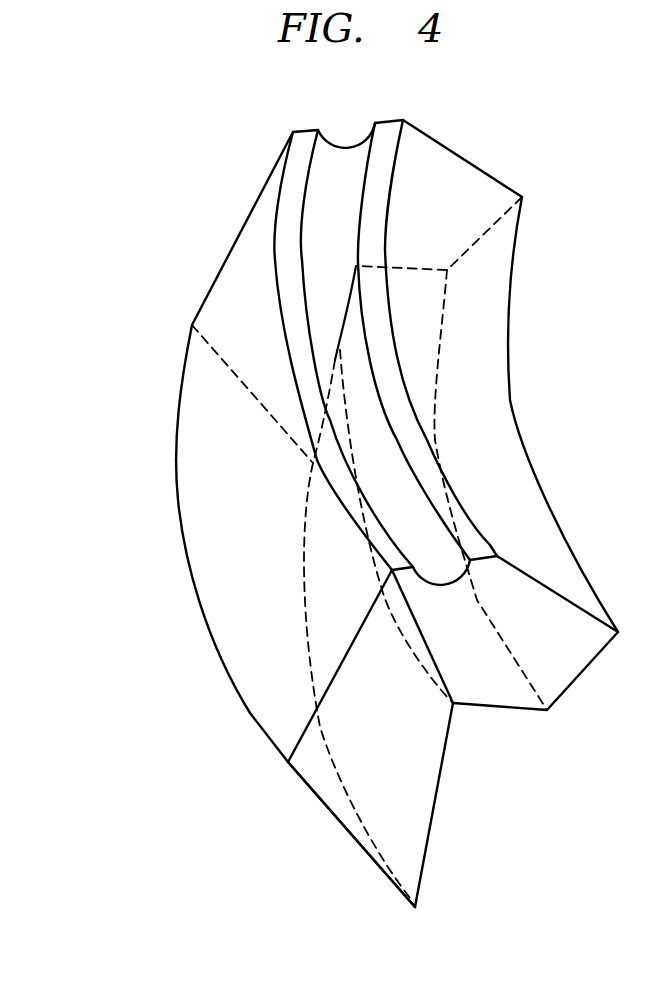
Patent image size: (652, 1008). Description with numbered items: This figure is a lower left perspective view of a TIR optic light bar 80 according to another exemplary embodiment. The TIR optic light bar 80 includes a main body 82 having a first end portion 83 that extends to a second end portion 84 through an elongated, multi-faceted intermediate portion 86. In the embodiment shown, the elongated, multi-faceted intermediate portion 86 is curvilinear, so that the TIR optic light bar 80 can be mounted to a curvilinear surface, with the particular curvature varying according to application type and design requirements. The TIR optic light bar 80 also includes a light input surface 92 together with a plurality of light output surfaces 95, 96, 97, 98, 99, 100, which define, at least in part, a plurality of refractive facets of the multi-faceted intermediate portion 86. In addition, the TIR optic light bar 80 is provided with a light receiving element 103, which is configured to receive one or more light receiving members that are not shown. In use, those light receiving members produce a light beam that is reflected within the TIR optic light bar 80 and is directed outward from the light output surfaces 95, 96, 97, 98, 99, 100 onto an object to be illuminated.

The TIR optic light bar 80 is at (145, 176).
The main body 82 is at (494, 381).
The first end portion 83 is at (402, 763).
The second end portion 84 is at (440, 142).
The elongated, multi-faceted intermediate portion 86 is at (235, 470).
The light input surface 92 is at (387, 123).
The light output surface 95 is at (470, 207).
The light output surface 96 is at (590, 667).
The light output surface 97 is at (507, 710).
The light output surface 98 is at (430, 860).
The light output surface 99 is at (327, 813).
The light output surface 100 is at (242, 642).
The light receiving element 103 is at (475, 577).